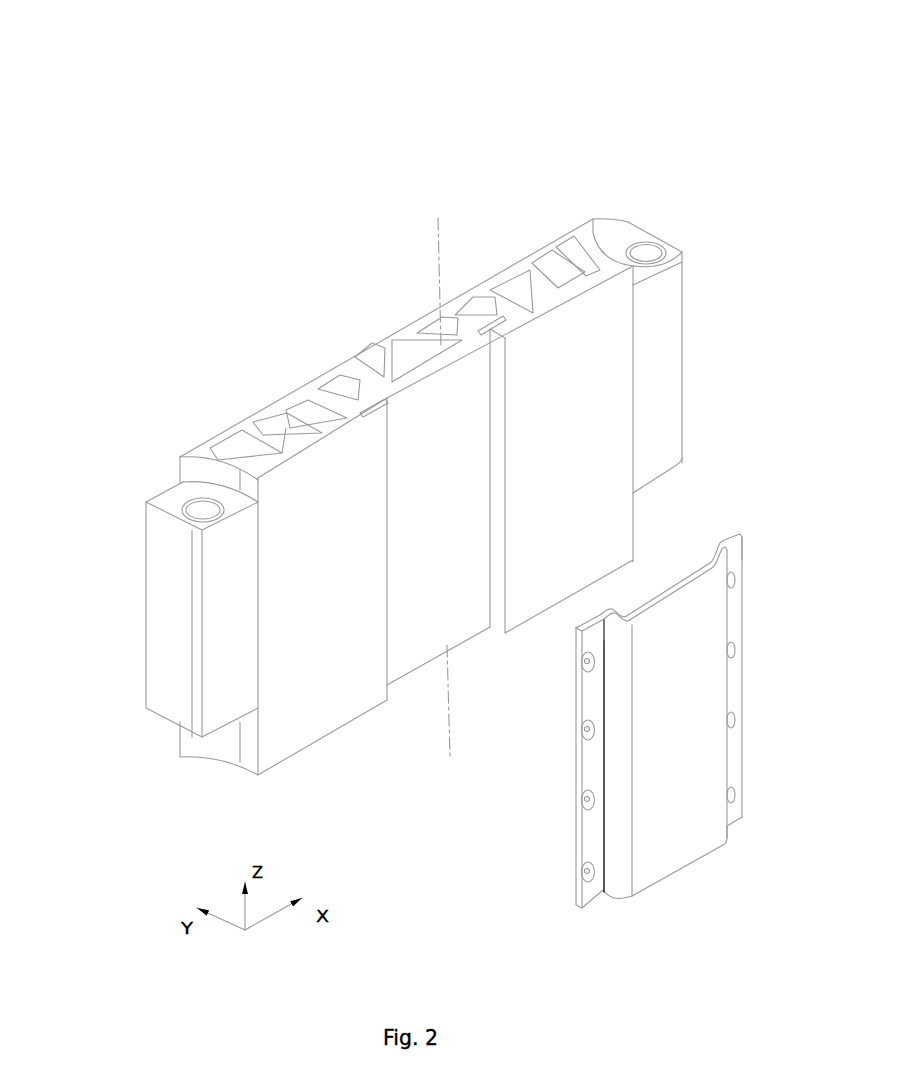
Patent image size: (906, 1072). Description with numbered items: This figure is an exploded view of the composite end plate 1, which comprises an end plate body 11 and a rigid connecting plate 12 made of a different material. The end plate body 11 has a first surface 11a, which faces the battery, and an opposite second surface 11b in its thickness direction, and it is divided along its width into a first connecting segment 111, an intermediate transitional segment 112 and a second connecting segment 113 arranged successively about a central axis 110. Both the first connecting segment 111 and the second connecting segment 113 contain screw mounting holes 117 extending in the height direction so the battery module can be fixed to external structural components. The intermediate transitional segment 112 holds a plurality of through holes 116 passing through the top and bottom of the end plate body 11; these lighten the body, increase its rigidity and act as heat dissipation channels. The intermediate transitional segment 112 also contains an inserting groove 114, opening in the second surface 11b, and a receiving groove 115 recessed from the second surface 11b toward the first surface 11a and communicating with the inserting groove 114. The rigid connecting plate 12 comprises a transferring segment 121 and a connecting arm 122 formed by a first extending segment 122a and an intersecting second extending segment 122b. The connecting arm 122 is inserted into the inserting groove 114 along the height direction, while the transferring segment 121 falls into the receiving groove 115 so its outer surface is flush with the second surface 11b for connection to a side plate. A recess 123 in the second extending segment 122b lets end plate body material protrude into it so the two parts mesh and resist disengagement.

The composite end plate 1 is at (471, 46).
The end plate body 11 is at (621, 177).
The first surface 11a is at (256, 411).
The second surface 11b is at (311, 712).
The central axis 110 is at (440, 228).
The first connecting segment 111 is at (160, 588).
The intermediate transitional segment 112 is at (393, 398).
The second connecting segment 113 is at (665, 350).
The inserting groove 114 is at (502, 300).
The receiving groove 115 is at (473, 648).
The through hole 116 is at (302, 404).
The mounting hole 117 is at (649, 251).
The rigid connecting plate 12 is at (529, 860).
The transferring segment 121 is at (667, 848).
The connecting arm 122 is at (734, 815).
The first extending segment 122a is at (708, 565).
The second extending segment 122b is at (727, 538).
The recess 123 is at (589, 738).